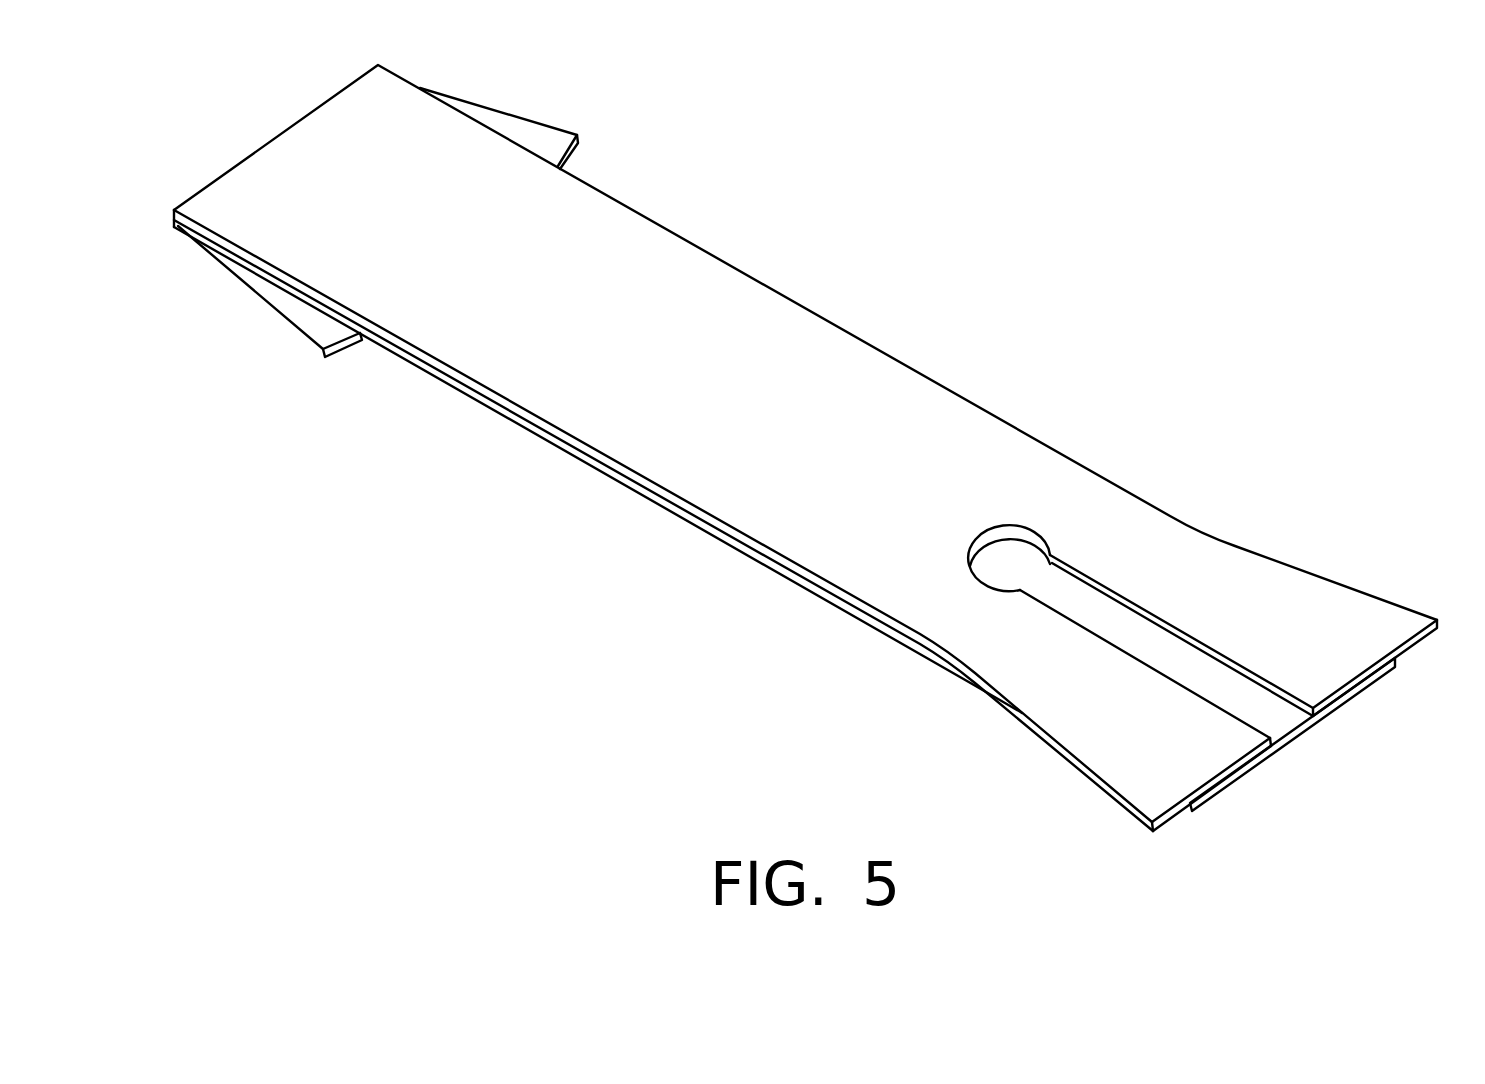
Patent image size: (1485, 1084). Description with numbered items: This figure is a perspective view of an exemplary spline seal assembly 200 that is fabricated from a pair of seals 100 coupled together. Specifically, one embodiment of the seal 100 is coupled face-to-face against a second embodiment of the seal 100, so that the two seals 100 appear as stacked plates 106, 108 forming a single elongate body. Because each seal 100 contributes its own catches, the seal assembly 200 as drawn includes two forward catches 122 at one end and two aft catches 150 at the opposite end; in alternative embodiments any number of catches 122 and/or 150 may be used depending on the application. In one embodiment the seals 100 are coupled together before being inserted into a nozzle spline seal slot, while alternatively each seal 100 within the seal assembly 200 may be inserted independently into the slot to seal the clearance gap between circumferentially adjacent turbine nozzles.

The spline seal 100 is at (802, 448).
The upper plate 106 is at (260, 147).
The lower plate 108 is at (1222, 782).
The forward catch 122 is at (258, 303).
The aft catch 150 is at (1353, 637).
The spline seal assembly 200 is at (1198, 268).